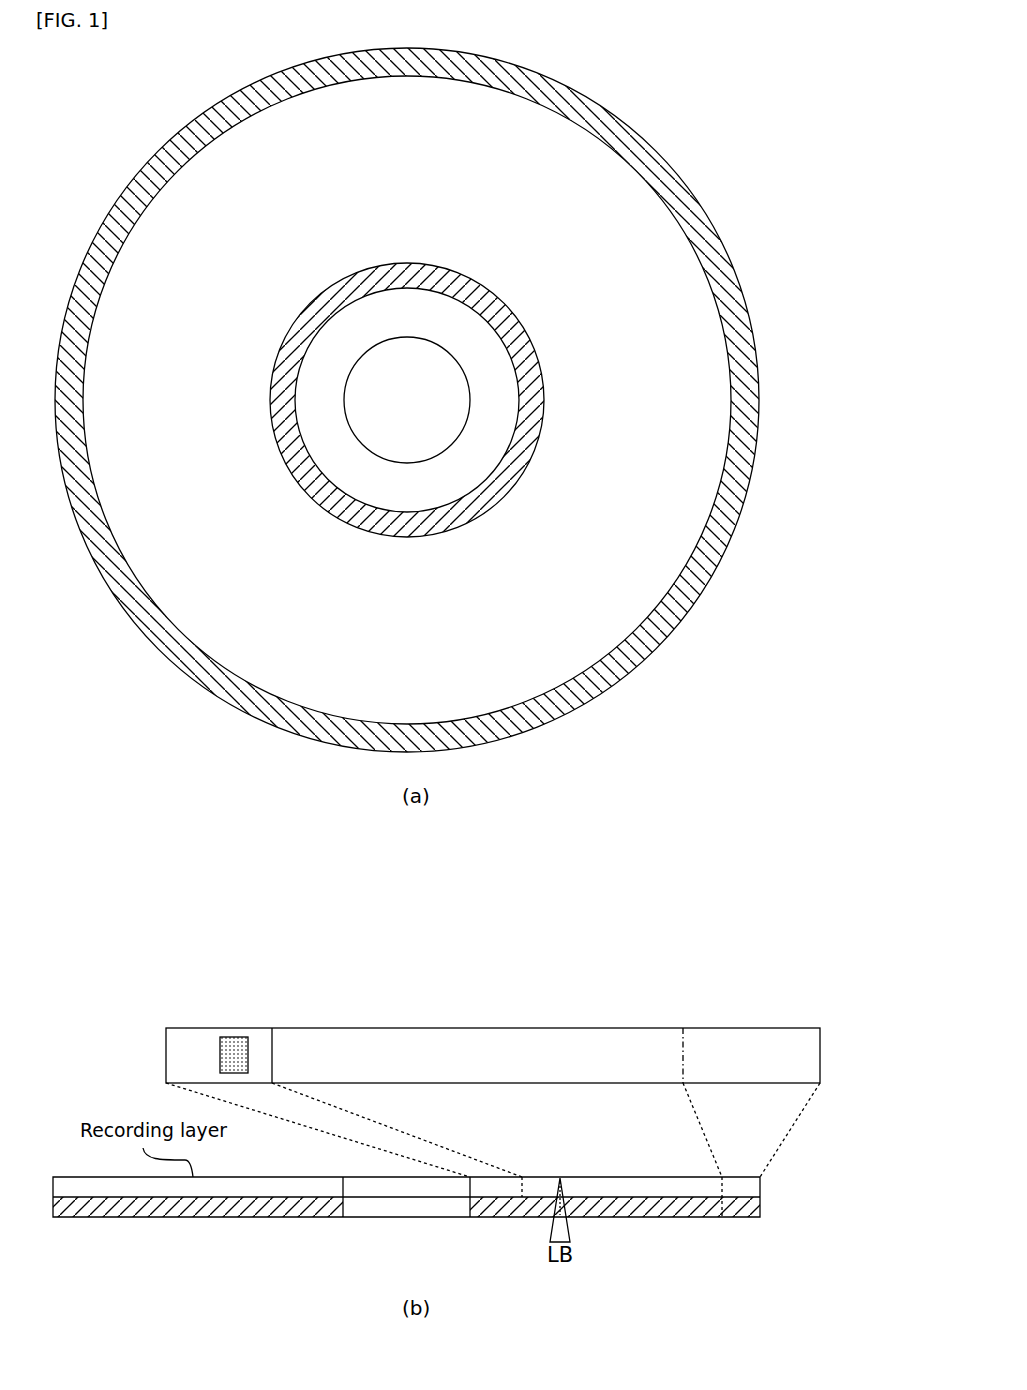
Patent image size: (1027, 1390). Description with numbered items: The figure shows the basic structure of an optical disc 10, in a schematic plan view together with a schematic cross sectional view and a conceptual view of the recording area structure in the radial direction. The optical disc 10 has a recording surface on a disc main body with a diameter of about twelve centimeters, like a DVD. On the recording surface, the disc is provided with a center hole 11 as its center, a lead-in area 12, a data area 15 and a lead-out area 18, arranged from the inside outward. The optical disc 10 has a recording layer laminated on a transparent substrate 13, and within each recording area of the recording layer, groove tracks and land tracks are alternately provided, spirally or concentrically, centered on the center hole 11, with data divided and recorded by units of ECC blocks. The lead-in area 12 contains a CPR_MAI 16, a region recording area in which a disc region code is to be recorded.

The optical disc 10 is at (577, 87).
The center hole 11 is at (357, 387).
The lead-in area 12 is at (527, 330).
The transparent substrate 13 is at (757, 1245).
The data area 15 is at (670, 373).
The CPR_MAI 16 is at (218, 1055).
The lead-out area 18 is at (738, 530).